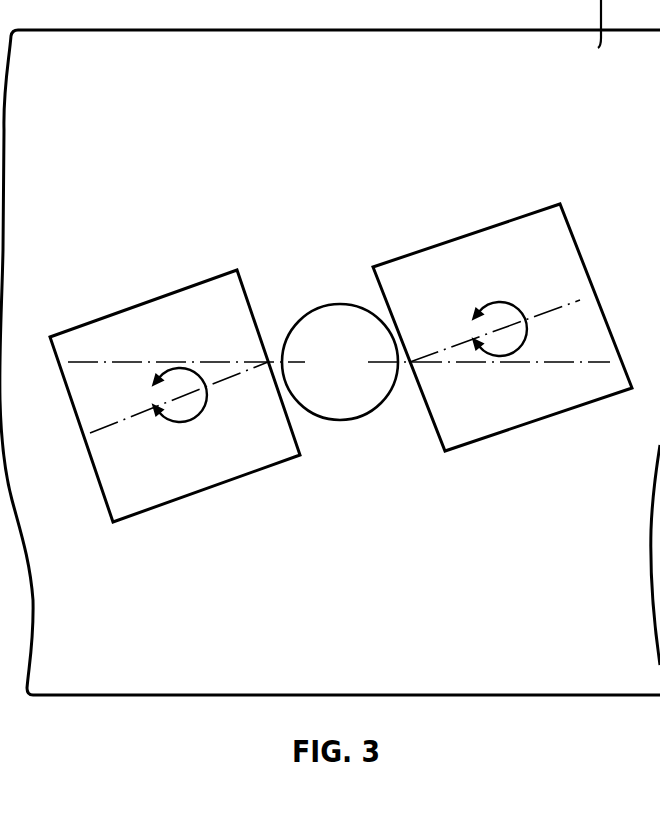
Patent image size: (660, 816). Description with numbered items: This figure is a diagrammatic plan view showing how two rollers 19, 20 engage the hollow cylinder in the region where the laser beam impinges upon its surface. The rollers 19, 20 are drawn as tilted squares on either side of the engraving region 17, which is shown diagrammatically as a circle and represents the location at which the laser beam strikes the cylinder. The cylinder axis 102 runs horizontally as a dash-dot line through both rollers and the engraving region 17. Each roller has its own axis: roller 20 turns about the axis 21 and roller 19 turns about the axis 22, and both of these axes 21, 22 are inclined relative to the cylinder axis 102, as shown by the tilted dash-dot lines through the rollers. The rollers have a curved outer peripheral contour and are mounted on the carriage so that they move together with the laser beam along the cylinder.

The cylinder axis 102 is at (93, 360).
The engraving region 17 is at (332, 315).
The roller 19 is at (568, 395).
The roller 20 is at (155, 498).
The roller axis 21 is at (108, 428).
The roller axis 22 is at (580, 300).